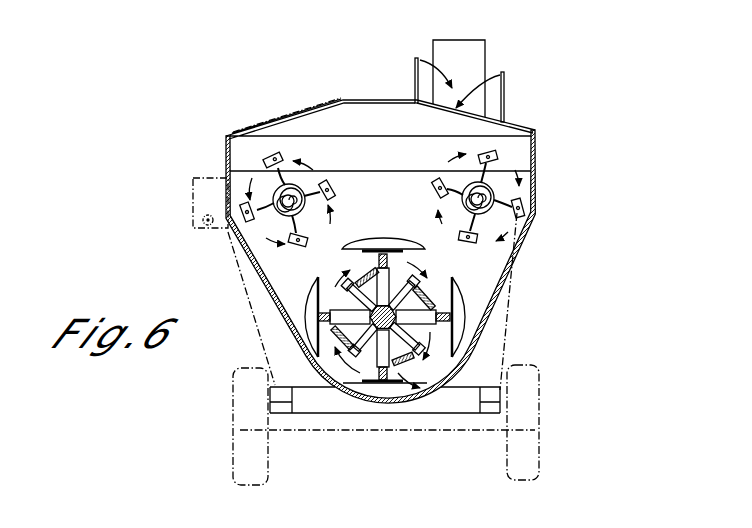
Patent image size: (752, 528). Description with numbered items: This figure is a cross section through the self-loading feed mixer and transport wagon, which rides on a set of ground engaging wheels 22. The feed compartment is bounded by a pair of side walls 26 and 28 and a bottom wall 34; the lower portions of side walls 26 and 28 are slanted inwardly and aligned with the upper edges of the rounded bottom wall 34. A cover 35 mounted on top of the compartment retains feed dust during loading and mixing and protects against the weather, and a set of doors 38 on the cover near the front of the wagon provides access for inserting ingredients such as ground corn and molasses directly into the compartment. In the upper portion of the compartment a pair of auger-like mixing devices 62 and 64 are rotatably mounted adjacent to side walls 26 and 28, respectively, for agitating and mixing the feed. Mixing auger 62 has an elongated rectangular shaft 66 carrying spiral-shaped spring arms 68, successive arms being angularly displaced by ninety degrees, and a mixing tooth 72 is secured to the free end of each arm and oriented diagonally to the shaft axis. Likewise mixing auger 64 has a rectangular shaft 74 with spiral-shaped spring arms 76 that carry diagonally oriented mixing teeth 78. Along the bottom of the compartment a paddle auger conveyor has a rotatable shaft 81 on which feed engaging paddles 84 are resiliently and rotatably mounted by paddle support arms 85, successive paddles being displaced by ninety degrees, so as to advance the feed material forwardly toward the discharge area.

The ground engaging wheels 22 is at (233, 438).
The side wall 26 is at (535, 175).
The side wall 28 is at (228, 182).
The bottom wall 34 is at (407, 405).
The cover 35 is at (374, 92).
The doors 38 is at (416, 77).
The mixing auger 62 is at (520, 157).
The mixing auger 64 is at (282, 150).
The rectangular shaft 66 is at (481, 194).
The spiral-shaped spring arms 68 is at (476, 228).
The mixing tooth 72 is at (612, 216).
The rectangular shaft 74 is at (280, 212).
The spiral-shaped spring arms 76 is at (327, 180).
The mixing teeth 78 is at (265, 158).
The conveyor shaft 81 is at (400, 328).
The feed engaging paddles 84 is at (386, 237).
The paddle support arms 85 is at (432, 396).